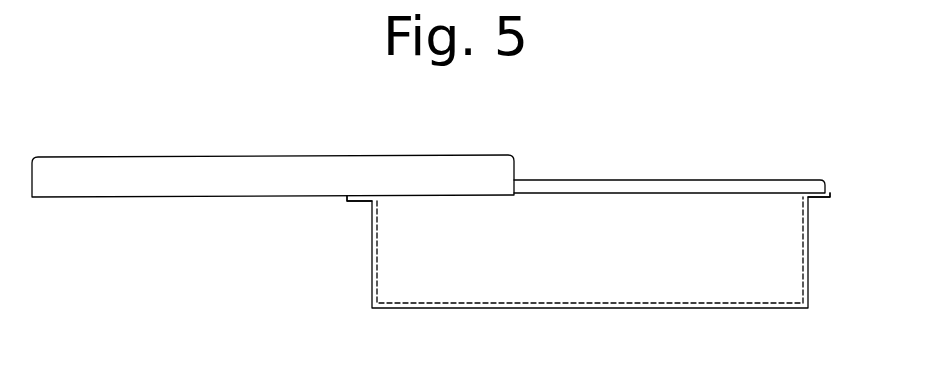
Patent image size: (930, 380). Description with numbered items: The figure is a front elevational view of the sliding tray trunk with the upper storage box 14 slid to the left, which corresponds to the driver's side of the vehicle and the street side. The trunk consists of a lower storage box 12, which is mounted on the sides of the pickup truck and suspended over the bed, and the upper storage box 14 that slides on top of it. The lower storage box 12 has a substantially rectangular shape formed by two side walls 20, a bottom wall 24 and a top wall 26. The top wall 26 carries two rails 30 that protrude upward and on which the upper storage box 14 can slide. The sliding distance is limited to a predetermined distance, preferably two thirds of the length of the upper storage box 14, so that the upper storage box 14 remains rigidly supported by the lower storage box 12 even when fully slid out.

The lower storage box 12 is at (810, 288).
The upper storage box 14 is at (425, 155).
The side walls 20 is at (377, 249).
The bottom wall 24 is at (648, 300).
The top wall 26 is at (356, 207).
The rails 30 is at (662, 180).